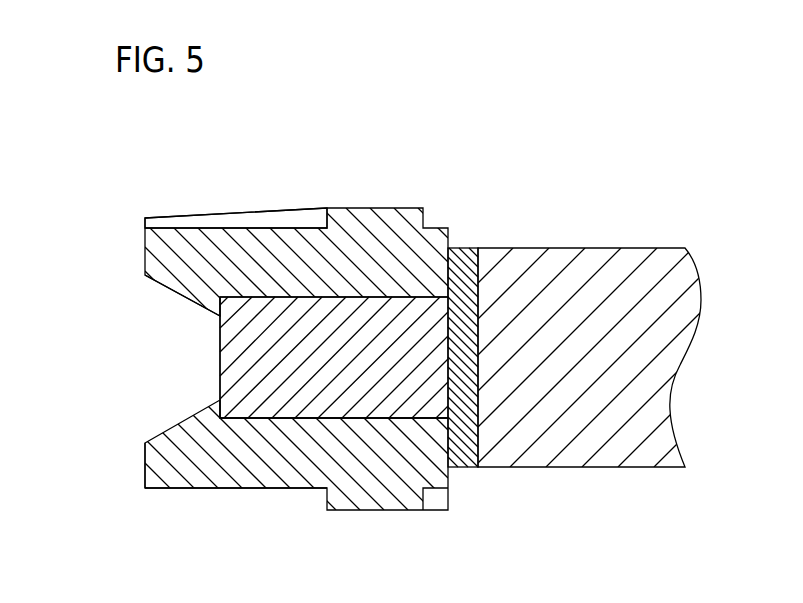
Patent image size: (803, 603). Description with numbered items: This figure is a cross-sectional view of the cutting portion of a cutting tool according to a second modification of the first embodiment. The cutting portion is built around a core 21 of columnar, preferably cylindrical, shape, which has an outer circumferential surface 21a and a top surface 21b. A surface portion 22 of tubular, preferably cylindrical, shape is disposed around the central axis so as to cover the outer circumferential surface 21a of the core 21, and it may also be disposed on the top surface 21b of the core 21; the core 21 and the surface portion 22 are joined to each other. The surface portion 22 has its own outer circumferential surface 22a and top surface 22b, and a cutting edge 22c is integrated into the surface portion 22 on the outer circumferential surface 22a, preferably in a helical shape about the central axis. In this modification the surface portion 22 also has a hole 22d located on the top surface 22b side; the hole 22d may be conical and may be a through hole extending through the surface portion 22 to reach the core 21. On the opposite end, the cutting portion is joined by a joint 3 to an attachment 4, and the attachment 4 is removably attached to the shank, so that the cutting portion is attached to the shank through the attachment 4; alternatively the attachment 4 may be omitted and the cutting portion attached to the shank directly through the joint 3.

The joint 3 is at (469, 468).
The attachment 4 is at (530, 459).
The core 21 is at (385, 323).
The outer circumferential surface 21a is at (284, 419).
The top surface 21b is at (219, 366).
The surface portion 22 is at (200, 250).
The outer circumferential surface 22a is at (227, 489).
The top surface 22b is at (145, 465).
The cutting edge 22c is at (281, 207).
The hole 22d is at (186, 300).